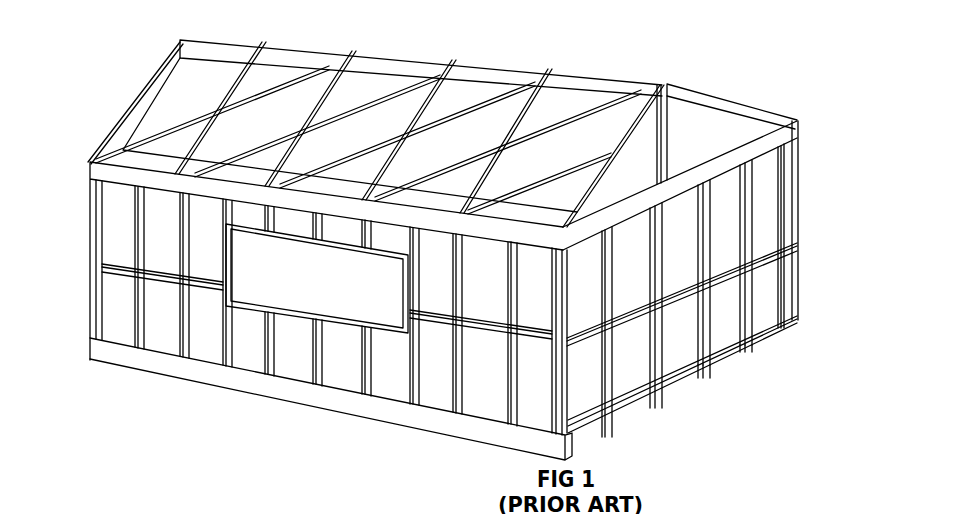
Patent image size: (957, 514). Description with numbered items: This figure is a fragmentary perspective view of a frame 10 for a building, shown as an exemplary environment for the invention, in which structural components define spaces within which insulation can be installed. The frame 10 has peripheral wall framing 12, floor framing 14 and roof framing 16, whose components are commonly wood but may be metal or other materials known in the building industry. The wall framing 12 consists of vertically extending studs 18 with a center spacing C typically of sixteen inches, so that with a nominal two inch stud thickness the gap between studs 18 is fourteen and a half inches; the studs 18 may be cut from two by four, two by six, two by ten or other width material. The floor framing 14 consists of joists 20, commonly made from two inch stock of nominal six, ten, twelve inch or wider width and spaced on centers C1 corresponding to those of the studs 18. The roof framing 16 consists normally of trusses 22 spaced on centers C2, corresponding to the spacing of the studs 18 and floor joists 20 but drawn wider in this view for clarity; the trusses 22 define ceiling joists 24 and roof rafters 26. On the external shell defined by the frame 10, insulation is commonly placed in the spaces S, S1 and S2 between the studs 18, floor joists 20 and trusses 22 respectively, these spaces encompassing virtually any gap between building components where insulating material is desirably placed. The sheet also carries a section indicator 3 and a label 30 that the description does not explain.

The frame 10 is at (504, 264).
The peripheral wall framing 12 is at (810, 262).
The floor framing 14 is at (600, 440).
The roof framing 16 is at (717, 92).
The studs 18 is at (710, 245).
The joists 20 is at (745, 355).
The trusses 22 is at (457, 78).
The ceiling joists 24 is at (472, 146).
The roof rafters 26 is at (362, 55).
The foundation reference 30 is at (755, 513).
The center spacing C is at (799, 121).
The centers C1 is at (710, 388).
The centers C2 is at (273, 32).
The space S is at (195, 332).
The space S1 is at (786, 337).
The space S2 is at (554, 178).
The section line of FIG. 3 is at (302, 480).